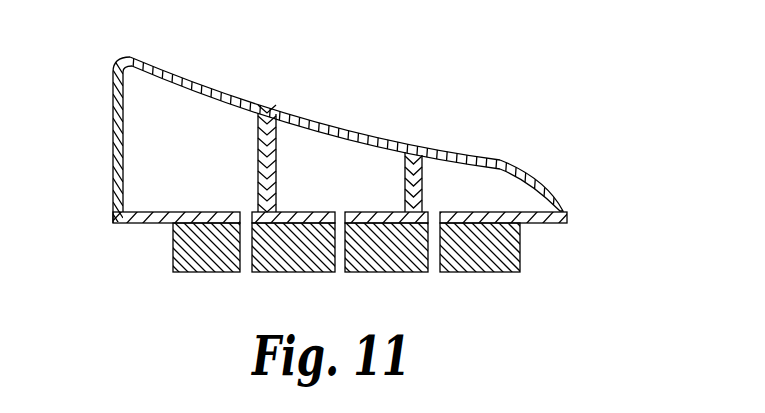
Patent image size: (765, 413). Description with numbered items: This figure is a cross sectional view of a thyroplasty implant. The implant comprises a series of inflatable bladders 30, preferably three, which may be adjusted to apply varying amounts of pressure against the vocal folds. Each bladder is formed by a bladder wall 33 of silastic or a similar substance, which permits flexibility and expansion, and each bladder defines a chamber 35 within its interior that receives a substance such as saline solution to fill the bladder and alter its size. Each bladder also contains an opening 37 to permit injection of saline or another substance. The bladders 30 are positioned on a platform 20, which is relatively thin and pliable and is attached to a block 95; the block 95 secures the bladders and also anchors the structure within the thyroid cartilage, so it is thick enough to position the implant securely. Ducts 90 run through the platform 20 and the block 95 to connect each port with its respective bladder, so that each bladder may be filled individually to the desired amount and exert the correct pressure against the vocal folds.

The inflatable bladders 30 is at (240, 78).
The bladder wall 33 is at (547, 180).
The chamber 35 is at (155, 131).
The opening 37 is at (248, 205).
The block 95 is at (160, 223).
The ducts 90 is at (248, 257).
The platform 20 is at (520, 243).